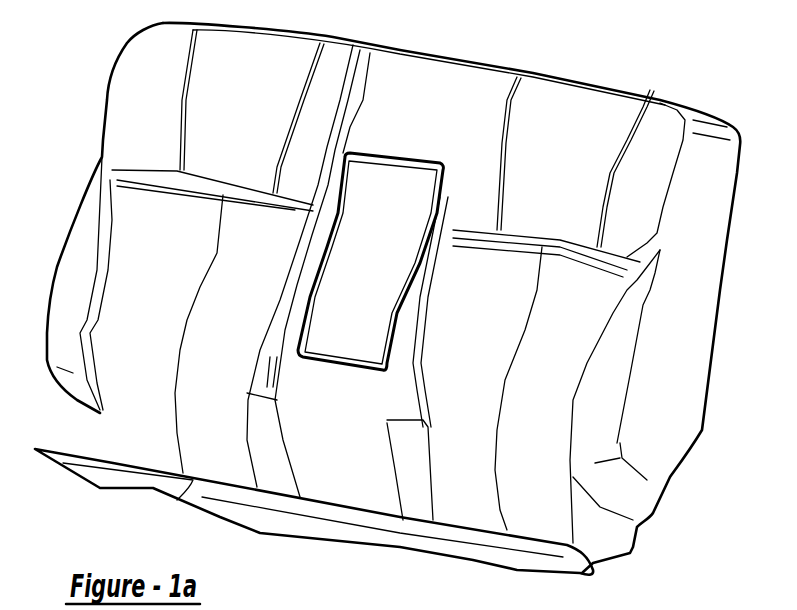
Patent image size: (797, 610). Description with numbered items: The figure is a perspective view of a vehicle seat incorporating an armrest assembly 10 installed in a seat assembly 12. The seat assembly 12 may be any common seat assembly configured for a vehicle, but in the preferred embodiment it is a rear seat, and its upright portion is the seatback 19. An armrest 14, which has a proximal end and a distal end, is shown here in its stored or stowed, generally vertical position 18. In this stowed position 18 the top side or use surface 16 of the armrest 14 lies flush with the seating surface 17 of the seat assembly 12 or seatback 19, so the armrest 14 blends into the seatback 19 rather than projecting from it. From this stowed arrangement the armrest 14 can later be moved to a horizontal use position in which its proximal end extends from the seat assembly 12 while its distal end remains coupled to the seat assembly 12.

The armrest assembly 10 is at (419, 243).
The seat assembly 12 is at (660, 100).
The armrest 14 is at (363, 328).
The top side or use surface 16 is at (403, 213).
The seating surface 17 is at (427, 290).
The stored or stowed, generally vertical position 18 is at (374, 154).
The seatback 19 is at (363, 128).